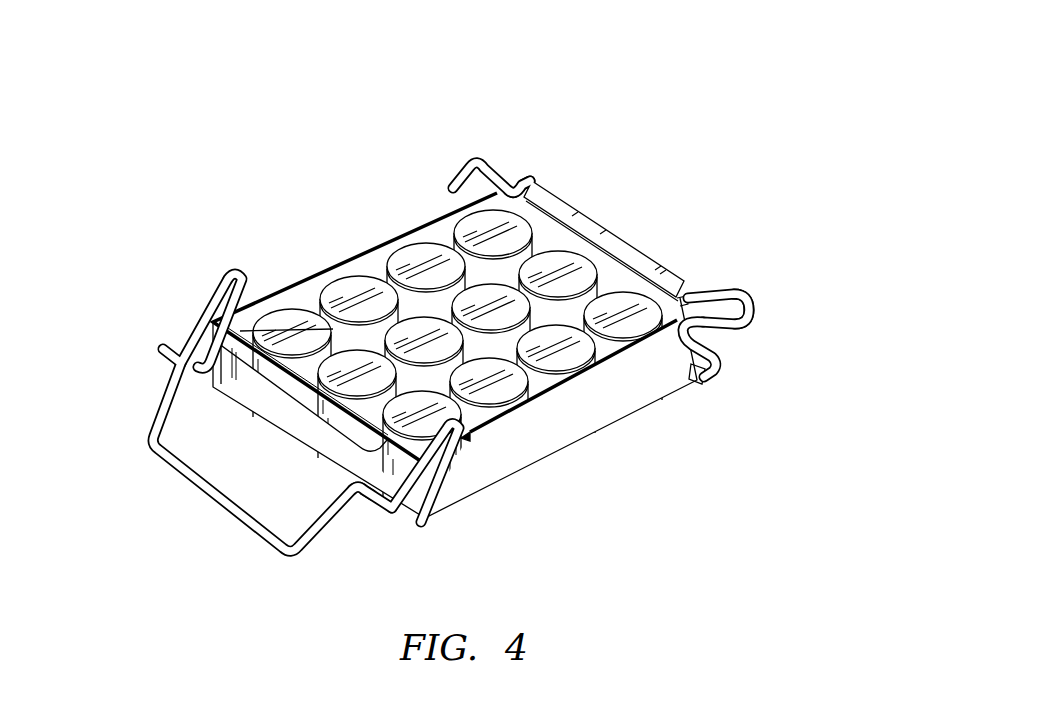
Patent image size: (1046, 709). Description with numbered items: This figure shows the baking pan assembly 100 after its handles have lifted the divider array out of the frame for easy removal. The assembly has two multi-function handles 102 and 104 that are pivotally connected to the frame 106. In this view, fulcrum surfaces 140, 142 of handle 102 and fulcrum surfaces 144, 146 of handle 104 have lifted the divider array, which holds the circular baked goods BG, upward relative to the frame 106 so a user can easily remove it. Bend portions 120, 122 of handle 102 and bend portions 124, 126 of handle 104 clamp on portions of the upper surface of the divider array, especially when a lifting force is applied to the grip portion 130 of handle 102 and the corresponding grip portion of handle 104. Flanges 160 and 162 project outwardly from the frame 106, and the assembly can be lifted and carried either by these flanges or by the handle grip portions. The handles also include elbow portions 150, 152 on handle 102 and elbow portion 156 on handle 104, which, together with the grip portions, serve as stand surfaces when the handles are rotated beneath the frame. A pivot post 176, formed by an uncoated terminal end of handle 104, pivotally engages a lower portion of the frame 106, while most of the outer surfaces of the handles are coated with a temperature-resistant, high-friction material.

The baking pan assembly 100 is at (457, 315).
The multi-function handle 102 is at (283, 382).
The multi-function handle 104 is at (641, 260).
The frame 106 is at (597, 430).
The bend portion 120 is at (160, 348).
The bend portion 122 is at (367, 507).
The bend portion 124 is at (523, 170).
The bend portion 126 is at (751, 296).
The grip portion 130 is at (202, 490).
The fulcrum surface 140 is at (199, 310).
The fulcrum surface 142 is at (450, 476).
The fulcrum surface 144 is at (490, 170).
The fulcrum surface 146 is at (712, 296).
The elbow portion 150 is at (241, 268).
The elbow portion 152 is at (477, 434).
The elbow portion 156 is at (688, 283).
The flange 160 is at (282, 382).
The flange 162 is at (607, 243).
The pivot post 176 is at (704, 384).
The baked goods BG is at (418, 256).